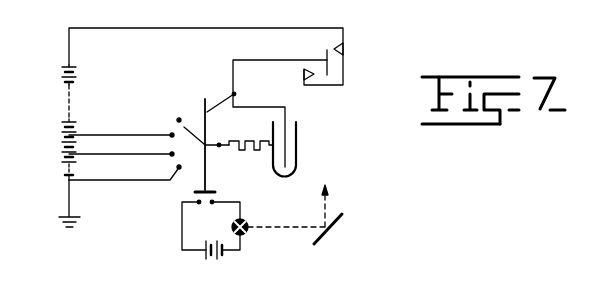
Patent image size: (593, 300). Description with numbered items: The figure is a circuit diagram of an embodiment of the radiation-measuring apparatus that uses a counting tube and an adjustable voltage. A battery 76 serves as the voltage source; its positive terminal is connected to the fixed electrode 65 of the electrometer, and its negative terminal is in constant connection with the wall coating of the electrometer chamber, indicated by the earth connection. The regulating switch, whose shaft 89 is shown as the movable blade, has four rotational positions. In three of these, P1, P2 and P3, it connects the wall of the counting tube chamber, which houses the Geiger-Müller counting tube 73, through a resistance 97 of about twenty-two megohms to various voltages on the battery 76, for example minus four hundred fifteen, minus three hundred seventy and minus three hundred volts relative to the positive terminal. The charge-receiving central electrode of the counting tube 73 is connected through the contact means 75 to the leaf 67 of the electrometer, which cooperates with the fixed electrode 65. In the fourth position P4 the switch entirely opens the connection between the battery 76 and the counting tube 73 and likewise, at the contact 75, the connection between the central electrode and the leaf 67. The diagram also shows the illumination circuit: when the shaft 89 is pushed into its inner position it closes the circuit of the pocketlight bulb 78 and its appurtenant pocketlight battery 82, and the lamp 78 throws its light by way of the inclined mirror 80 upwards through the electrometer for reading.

The fixed electrode 65 is at (340, 70).
The leaf 67 is at (322, 50).
The Geiger-Müller counting tube 73 is at (296, 153).
The contact means 75 is at (236, 87).
The battery 76 is at (60, 149).
The pocketlight bulb 78 is at (247, 229).
The inclined mirror 80 is at (334, 224).
The pocketlight battery 82 is at (219, 258).
The shaft of the regulating switch 89 is at (202, 100).
The resistance 97 is at (257, 148).
The first rotational position P1 is at (130, 180).
The second rotational position P2 is at (121, 168).
The third rotational position P3 is at (121, 144).
The fourth rotational position P4 is at (182, 124).